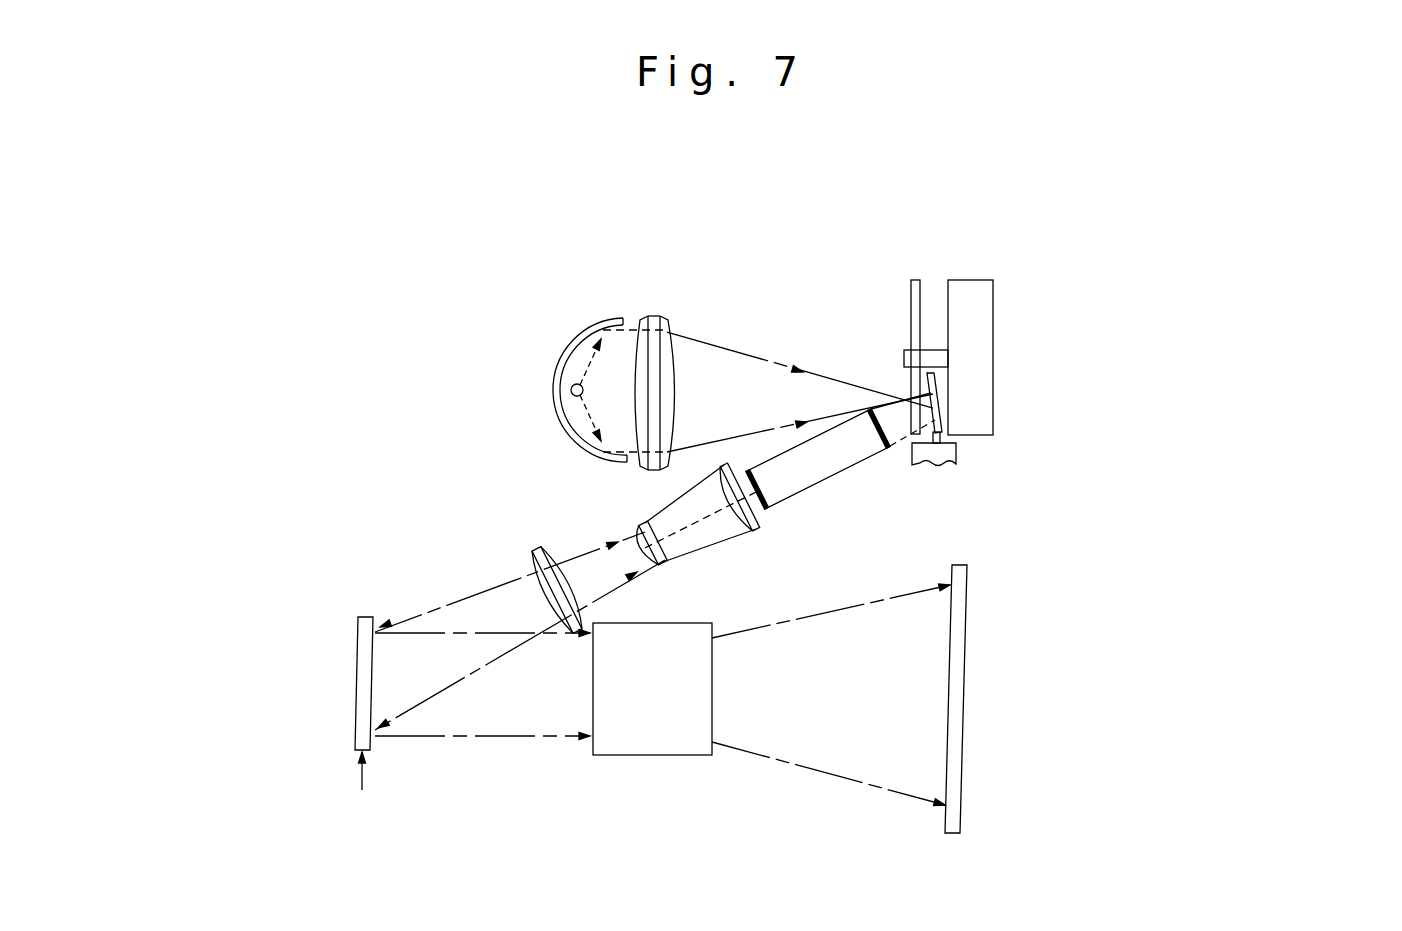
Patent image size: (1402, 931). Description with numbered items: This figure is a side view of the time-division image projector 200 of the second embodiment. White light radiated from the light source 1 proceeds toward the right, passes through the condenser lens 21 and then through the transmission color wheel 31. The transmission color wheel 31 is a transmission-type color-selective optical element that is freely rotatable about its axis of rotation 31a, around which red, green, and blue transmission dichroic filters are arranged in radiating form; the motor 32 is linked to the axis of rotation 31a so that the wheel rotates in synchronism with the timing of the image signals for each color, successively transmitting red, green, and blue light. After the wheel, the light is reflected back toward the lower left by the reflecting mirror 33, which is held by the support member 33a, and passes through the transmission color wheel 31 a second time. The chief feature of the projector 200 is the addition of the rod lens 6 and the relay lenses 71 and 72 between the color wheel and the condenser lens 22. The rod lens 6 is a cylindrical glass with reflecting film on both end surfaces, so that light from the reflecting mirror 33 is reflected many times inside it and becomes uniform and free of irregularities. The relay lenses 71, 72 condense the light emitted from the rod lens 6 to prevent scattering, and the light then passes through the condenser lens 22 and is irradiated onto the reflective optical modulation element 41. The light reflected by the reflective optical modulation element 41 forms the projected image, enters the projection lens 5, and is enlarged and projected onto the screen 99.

The time-division image projector 200 is at (1098, 317).
The light source 1 is at (568, 364).
The condenser lens 21 is at (656, 314).
The condenser lens 22 is at (540, 549).
The transmission color wheel 31 is at (918, 279).
The axis of rotation 31a is at (930, 349).
The motor 32 is at (993, 314).
The reflecting mirror 33 is at (908, 399).
The support member 33a is at (951, 453).
The rod lens 6 is at (828, 468).
The relay lens 71 is at (752, 528).
The relay lens 72 is at (663, 557).
The reflective optical modulation element 41 is at (357, 680).
The projection lens 5 is at (653, 740).
The screen 99 is at (965, 687).